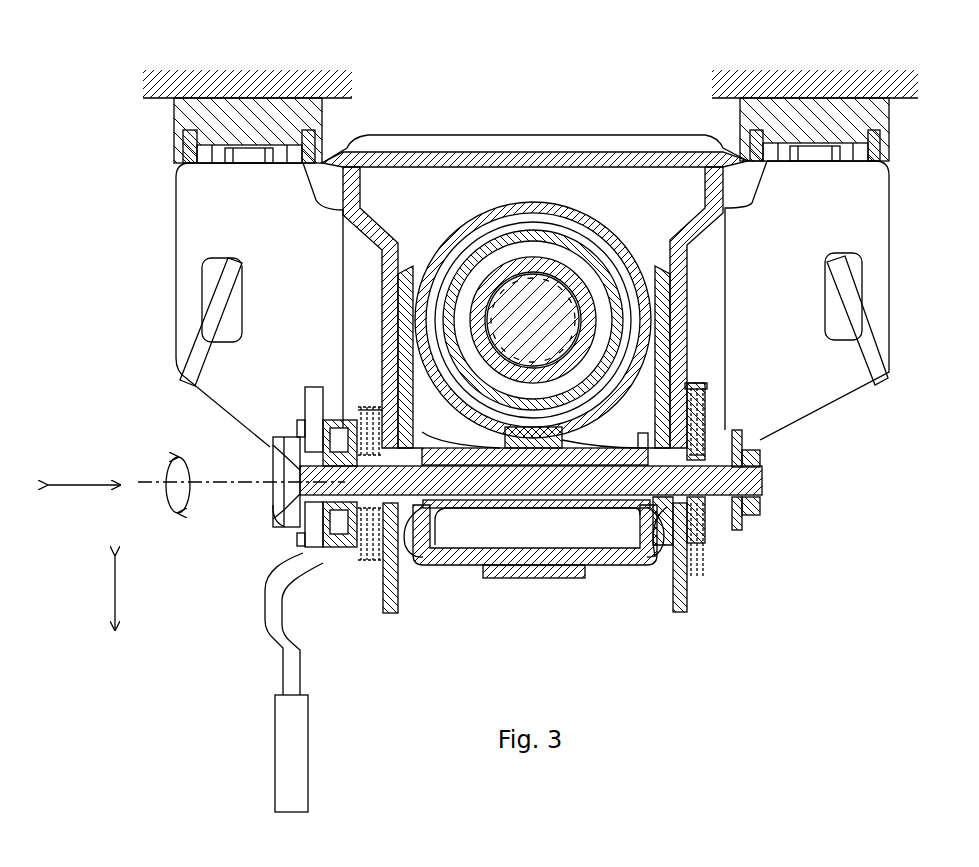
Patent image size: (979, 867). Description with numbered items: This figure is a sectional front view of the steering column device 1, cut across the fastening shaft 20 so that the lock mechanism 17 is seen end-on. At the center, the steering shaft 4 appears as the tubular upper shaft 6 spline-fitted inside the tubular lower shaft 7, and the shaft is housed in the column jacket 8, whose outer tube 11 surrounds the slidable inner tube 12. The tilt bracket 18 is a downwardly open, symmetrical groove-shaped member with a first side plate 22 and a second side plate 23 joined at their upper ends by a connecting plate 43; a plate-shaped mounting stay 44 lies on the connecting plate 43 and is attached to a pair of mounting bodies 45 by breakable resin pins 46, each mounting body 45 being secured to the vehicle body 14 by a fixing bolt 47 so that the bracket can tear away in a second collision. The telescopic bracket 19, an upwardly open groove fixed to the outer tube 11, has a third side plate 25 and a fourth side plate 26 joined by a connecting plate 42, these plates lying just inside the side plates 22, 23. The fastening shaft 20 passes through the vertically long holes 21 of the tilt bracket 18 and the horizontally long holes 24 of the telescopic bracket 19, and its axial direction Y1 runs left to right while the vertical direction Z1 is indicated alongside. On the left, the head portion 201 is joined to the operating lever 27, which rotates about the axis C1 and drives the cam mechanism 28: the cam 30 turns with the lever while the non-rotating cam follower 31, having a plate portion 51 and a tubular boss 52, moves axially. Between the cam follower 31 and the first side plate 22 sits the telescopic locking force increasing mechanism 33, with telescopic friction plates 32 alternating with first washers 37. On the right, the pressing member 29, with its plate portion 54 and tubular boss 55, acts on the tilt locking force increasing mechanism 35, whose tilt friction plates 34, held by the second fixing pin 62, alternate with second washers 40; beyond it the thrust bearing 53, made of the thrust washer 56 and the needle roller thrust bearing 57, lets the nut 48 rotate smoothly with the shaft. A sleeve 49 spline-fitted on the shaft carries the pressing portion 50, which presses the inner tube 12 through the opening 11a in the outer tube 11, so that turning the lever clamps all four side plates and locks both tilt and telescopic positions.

The steering column device 1 is at (604, 112).
The steering shaft 4 is at (533, 222).
The upper shaft 6 is at (533, 262).
The lower shaft 7 is at (555, 305).
The column jacket 8 is at (521, 244).
The outer tube 11 is at (456, 250).
The opening 11a is at (505, 440).
The inner tube 12 is at (428, 290).
The vehicle body 14 is at (250, 88).
The lock mechanism 17 is at (268, 468).
The tilt bracket 18 is at (535, 269).
The telescopic bracket 19 is at (474, 568).
The fastening shaft 20 is at (558, 510).
The vertically long hole 21 is at (340, 430).
The first side plate 22 is at (385, 262).
The second side plate 23 is at (680, 262).
The horizontally long hole 24 is at (416, 560).
The third side plate 25 is at (400, 302).
The fourth side plate 26 is at (668, 312).
The operating lever 27 is at (283, 670).
The cam mechanism 28 is at (247, 621).
The pressing member 29 is at (742, 528).
The cam 30 is at (310, 548).
The cam follower 31 is at (320, 570).
The telescopic friction plate 32 is at (366, 562).
The telescopic locking force increasing mechanism 33 is at (362, 404).
The tilt friction plate 34 is at (692, 385).
The tilt locking force increasing mechanism 35 is at (704, 392).
The first washer 37 is at (370, 402).
The second washer 40 is at (750, 517).
The connecting plate 42 is at (590, 568).
The connecting plate 43 is at (500, 150).
The mounting stay 44 is at (692, 133).
The mounting body 45 is at (183, 118).
The breakable pin 46 is at (312, 135).
The fixing bolt 47 is at (248, 160).
The nut 48 is at (763, 500).
The sleeve 49 is at (527, 512).
The pressing portion 50 is at (565, 442).
The plate portion 51 is at (300, 433).
The tubular boss 52 is at (400, 552).
The thrust bearing 53 is at (819, 454).
The plate portion 54 is at (703, 555).
The tubular boss 55 is at (658, 560).
The thrust washer 56 is at (760, 456).
The needle roller thrust bearing 57 is at (742, 436).
The second fixing pin 62 is at (707, 386).
The head portion 201 is at (278, 516).
The axis C1 is at (152, 482).
The axial direction Y1 is at (85, 490).
The vertical direction Z1 is at (112, 592).